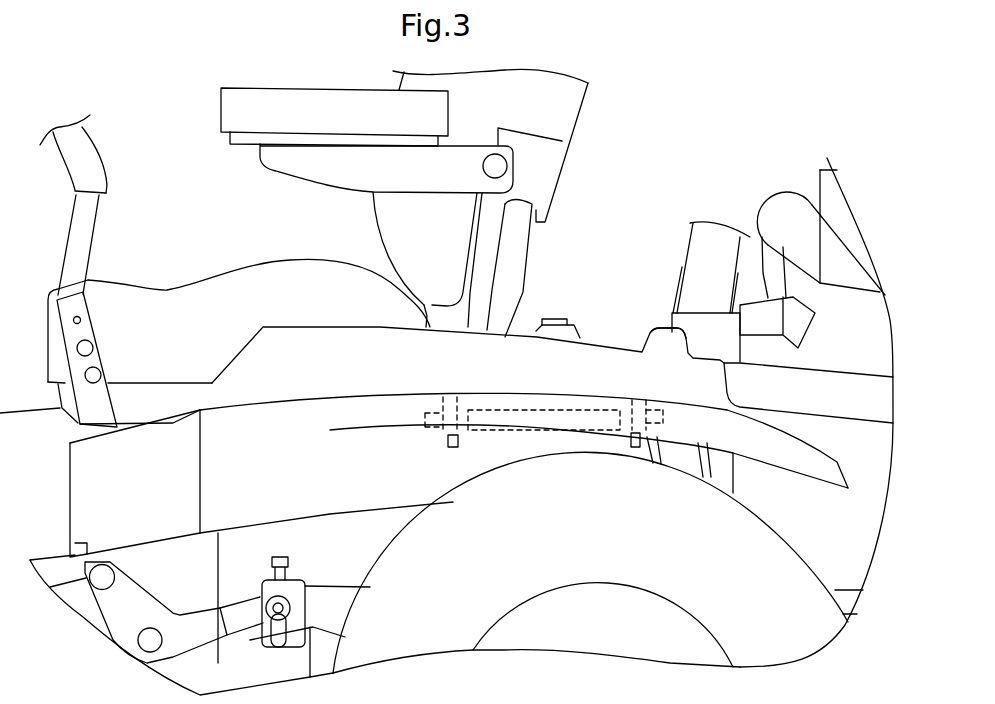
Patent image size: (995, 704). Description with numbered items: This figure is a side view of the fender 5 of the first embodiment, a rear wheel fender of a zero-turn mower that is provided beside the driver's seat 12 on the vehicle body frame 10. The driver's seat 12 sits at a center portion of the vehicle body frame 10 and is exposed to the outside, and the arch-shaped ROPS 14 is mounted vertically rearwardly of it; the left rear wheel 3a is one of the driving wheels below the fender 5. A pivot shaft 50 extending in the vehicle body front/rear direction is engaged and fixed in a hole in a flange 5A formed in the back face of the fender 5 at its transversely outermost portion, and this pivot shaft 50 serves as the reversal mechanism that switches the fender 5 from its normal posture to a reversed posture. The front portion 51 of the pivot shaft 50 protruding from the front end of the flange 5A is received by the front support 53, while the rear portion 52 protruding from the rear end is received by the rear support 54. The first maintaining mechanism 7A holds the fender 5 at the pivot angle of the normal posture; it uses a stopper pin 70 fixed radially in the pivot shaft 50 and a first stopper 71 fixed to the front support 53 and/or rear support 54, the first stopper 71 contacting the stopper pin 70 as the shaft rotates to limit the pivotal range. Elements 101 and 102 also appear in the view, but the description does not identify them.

The left rear wheel 3a is at (410, 580).
The fender 5 is at (552, 370).
The flange 5A is at (506, 408).
The first maintaining mechanism 7A is at (432, 392).
The vehicle body frame 10 is at (317, 553).
The driver's seat 12 is at (543, 113).
The ROPS 14 is at (712, 258).
The pivot shaft 50 is at (318, 383).
The front portion 51 is at (420, 414).
The rear portion 52 is at (665, 421).
The front support 53 is at (448, 395).
The rear support 54 is at (632, 396).
The stopper pin 70 is at (442, 433).
The first stopper 71 is at (440, 403).
The step 101 is at (140, 498).
The rear body panel 102 is at (868, 402).